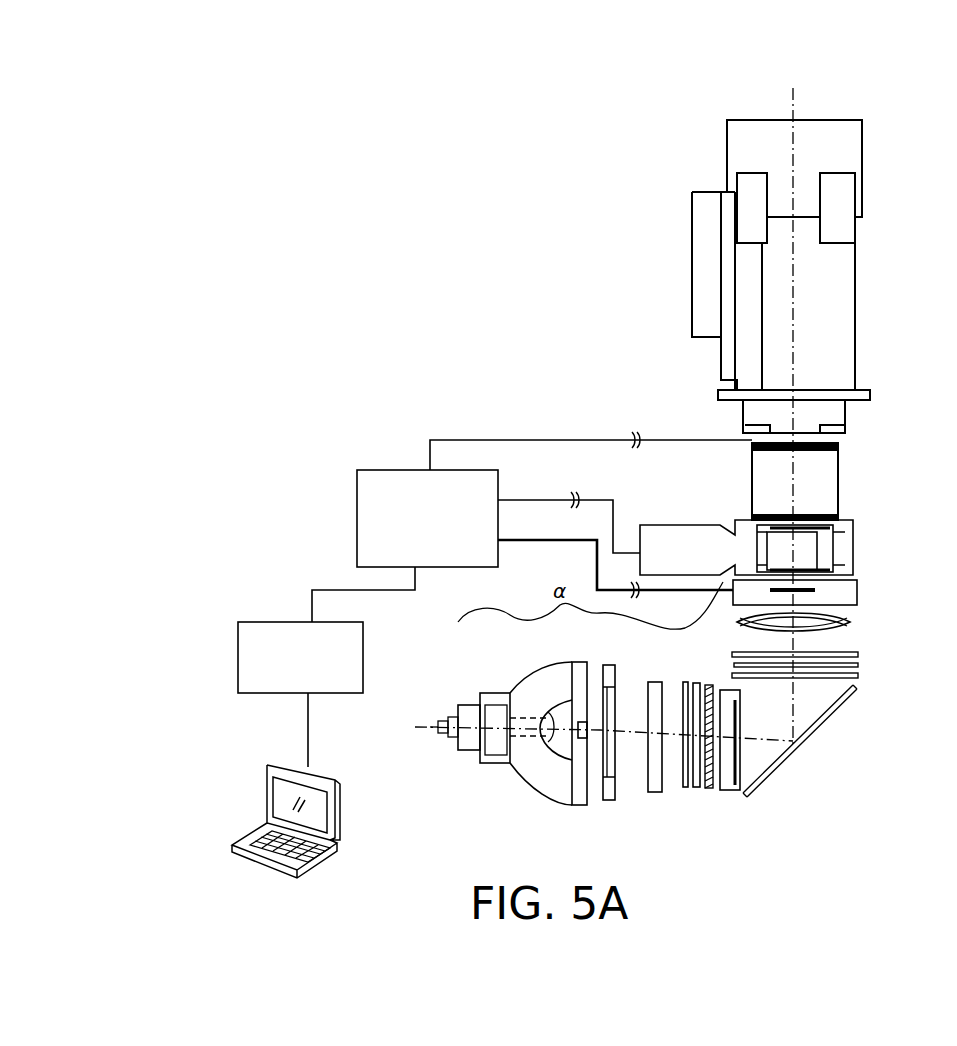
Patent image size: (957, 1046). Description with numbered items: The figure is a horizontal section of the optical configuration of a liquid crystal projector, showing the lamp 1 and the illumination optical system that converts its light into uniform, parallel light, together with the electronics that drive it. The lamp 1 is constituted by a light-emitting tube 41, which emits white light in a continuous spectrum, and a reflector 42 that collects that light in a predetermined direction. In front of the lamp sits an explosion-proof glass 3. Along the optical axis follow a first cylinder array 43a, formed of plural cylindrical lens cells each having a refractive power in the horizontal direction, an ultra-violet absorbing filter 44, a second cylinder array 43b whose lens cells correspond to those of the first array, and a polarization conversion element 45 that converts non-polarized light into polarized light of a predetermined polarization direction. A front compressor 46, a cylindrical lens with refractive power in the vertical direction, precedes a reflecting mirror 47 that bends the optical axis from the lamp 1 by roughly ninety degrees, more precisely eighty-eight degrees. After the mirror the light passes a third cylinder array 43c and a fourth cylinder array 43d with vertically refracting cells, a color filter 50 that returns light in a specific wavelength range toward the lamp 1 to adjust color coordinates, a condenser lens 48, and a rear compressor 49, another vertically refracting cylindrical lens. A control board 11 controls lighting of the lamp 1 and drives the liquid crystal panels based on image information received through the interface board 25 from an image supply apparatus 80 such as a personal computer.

The light source lamp 1 is at (531, 657).
The explosion-proof glass 3 is at (608, 800).
The control board 11 is at (357, 490).
The interface board 25 is at (238, 655).
The light-emitting tube 41 is at (510, 698).
The reflector 42 is at (538, 788).
The first cylinder array 43a is at (652, 792).
The second cylinder array 43b is at (697, 787).
The third cylinder array 43c is at (858, 676).
The fourth cylinder array 43d is at (858, 654).
The ultra-violet absorbing filter 44 is at (684, 787).
The polarization conversion element 45 is at (709, 790).
The front compressor 46 is at (735, 790).
The reflecting mirror 47 is at (792, 752).
The condenser lens 48 is at (850, 622).
The rear compressor 49 is at (857, 590).
The color filter 50 is at (843, 676).
The image supply apparatus 80 is at (343, 810).